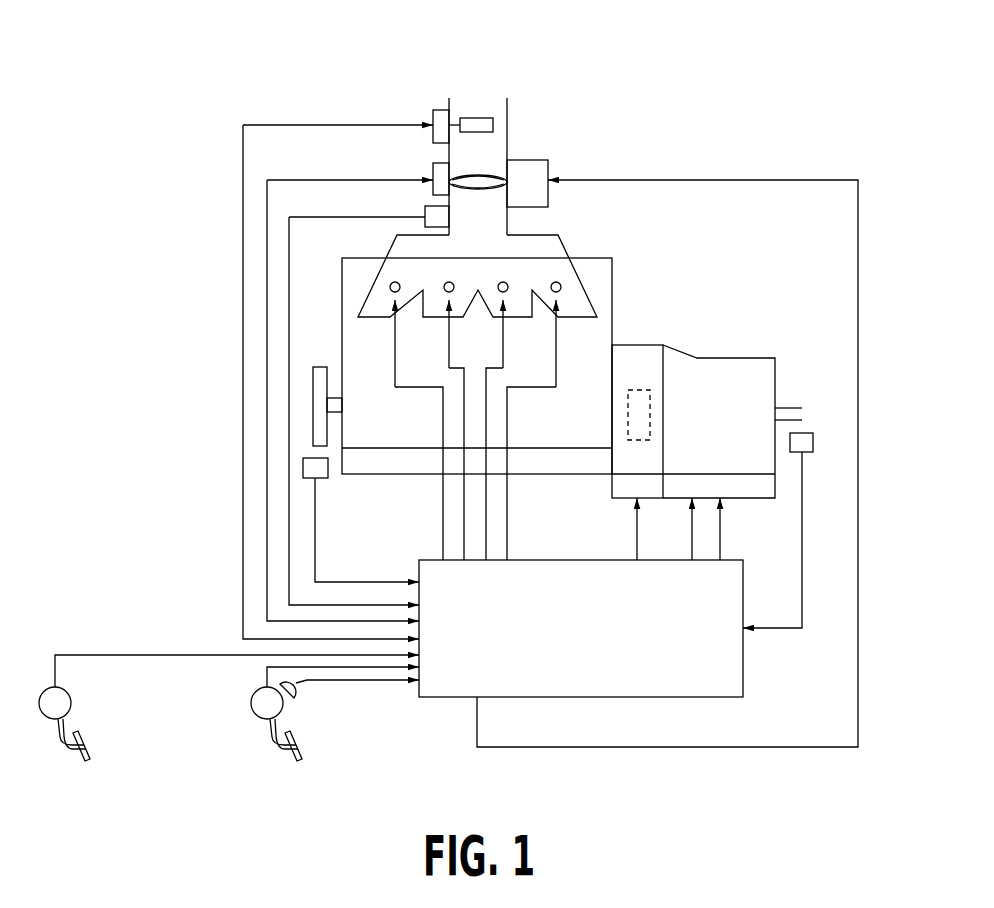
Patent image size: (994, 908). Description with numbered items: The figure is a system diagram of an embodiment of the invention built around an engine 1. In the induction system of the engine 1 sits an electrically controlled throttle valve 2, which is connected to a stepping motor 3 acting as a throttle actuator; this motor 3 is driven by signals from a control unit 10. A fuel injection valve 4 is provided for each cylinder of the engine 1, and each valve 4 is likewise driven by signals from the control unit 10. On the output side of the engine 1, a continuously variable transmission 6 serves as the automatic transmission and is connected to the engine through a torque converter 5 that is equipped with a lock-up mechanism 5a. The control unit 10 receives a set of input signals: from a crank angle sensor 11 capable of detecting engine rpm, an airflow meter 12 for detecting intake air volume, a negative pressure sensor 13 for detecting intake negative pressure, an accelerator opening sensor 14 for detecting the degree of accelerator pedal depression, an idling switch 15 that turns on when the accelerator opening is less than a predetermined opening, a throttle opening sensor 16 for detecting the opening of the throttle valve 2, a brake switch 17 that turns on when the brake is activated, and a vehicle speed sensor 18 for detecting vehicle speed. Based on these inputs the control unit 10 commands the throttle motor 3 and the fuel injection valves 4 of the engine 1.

The engine 1 is at (612, 280).
The throttle valve 2 is at (478, 176).
The stepping motor 3 is at (548, 160).
The fuel injection valve 4 is at (559, 282).
The torque converter 5 is at (660, 345).
The lock-up mechanism 5a is at (667, 403).
The continuously variable transmission 6 is at (750, 358).
The control unit 10 is at (537, 558).
The crank angle sensor 11 is at (318, 478).
The airflow meter 12 is at (433, 117).
The negative pressure sensor 13 is at (425, 210).
The accelerator opening sensor 14 is at (252, 708).
The idling switch 15 is at (290, 698).
The throttle opening sensor 16 is at (433, 170).
The brake switch 17 is at (70, 699).
The vehicle speed sensor 18 is at (813, 440).